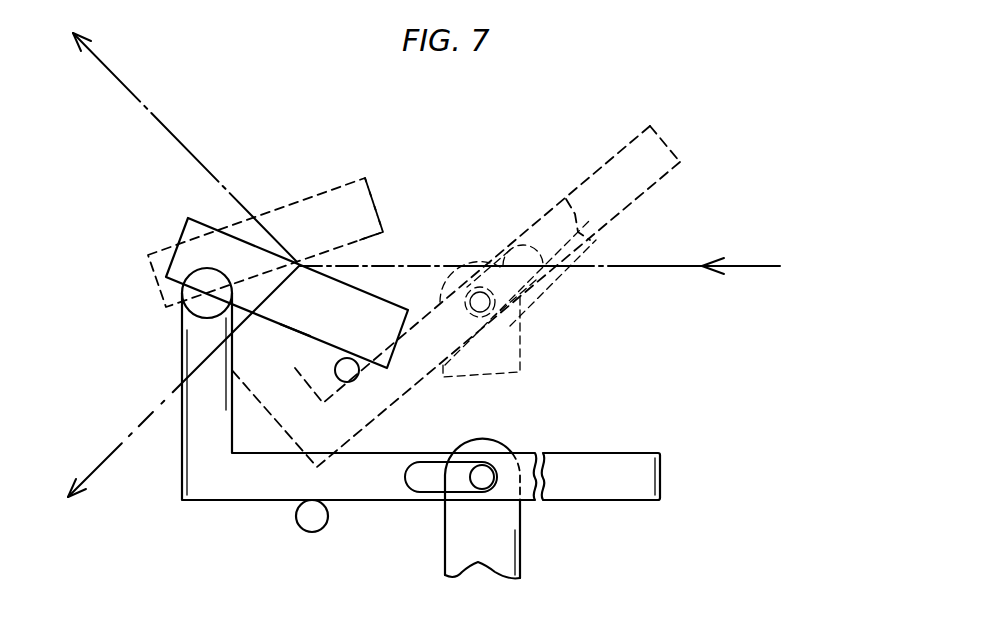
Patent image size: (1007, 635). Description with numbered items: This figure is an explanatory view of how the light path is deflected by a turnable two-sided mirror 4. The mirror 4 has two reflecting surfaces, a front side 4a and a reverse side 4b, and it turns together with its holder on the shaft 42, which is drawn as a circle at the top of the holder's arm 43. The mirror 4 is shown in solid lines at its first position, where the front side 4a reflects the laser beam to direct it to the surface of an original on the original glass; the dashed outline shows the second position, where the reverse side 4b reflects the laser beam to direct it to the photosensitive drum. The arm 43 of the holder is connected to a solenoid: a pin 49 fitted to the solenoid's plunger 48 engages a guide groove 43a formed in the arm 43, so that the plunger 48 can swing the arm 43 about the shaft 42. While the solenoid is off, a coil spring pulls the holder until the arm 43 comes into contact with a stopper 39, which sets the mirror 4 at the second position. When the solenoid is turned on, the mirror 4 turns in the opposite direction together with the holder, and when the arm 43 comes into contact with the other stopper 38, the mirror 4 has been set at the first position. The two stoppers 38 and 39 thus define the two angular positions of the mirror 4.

The mirror 4 is at (188, 219).
The front side 4a is at (397, 301).
The reverse side 4b is at (378, 238).
The stopper 38 is at (312, 532).
The stopper 39 is at (349, 382).
The shaft 42 is at (188, 318).
The arm 43 is at (223, 490).
The guide groove 43a is at (428, 473).
The plunger 48 is at (518, 543).
The pin 49 is at (472, 487).